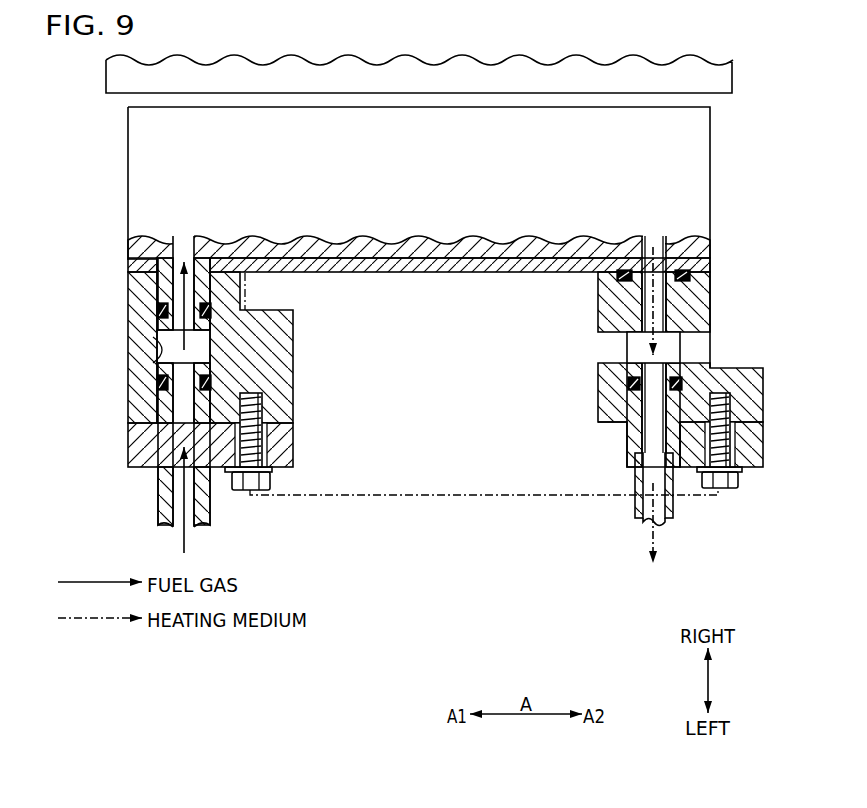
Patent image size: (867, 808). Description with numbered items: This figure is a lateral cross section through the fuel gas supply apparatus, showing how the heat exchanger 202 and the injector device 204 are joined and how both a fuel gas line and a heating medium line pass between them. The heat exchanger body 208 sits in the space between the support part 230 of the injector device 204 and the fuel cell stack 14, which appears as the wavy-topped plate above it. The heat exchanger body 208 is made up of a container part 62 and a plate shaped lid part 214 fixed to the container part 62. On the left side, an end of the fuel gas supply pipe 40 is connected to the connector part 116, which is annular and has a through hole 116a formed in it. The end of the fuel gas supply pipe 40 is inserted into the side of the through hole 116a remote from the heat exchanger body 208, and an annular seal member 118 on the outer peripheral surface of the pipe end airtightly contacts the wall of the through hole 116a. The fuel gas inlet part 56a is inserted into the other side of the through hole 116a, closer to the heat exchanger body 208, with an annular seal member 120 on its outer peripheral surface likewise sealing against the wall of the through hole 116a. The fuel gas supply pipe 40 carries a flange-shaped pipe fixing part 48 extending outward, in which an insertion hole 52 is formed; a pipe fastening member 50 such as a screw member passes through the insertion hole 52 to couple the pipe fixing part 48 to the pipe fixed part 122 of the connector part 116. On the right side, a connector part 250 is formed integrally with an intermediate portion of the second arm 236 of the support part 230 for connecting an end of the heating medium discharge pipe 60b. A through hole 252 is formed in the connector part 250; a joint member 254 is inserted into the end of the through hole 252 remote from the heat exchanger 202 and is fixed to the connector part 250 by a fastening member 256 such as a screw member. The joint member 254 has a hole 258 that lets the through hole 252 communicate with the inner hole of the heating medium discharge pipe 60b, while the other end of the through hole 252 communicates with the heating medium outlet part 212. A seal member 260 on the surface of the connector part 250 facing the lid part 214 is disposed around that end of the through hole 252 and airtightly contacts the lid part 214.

The fuel cell stack 14 is at (118, 83).
The heat exchanger 202 is at (584, 104).
The heat exchanger body 208 is at (713, 124).
The container part 62 is at (135, 202).
The lid part 214 is at (140, 268).
The support part 230 is at (122, 412).
The injector device 204 is at (209, 394).
The connector part 116 is at (147, 343).
The through hole 116a is at (160, 361).
The fuel gas inlet part 56a is at (163, 295).
The annular seal member 120 is at (162, 310).
The annular seal member 118 is at (212, 383).
The pipe fixed part 122 is at (280, 343).
The pipe fixing part 48 is at (285, 436).
The insertion hole 52 is at (238, 443).
The pipe fastening member 50 is at (247, 488).
The fuel gas supply pipe 40 is at (163, 502).
The connector part 250 is at (610, 370).
The second arm 236 is at (598, 423).
The through hole 252 is at (668, 345).
The seal member 260 is at (621, 268).
The heating medium outlet part 212 is at (663, 250).
The hole 258 is at (650, 394).
The heating medium discharge pipe 60b is at (637, 510).
The joint member 254 is at (750, 468).
The fastening member 256 is at (727, 486).